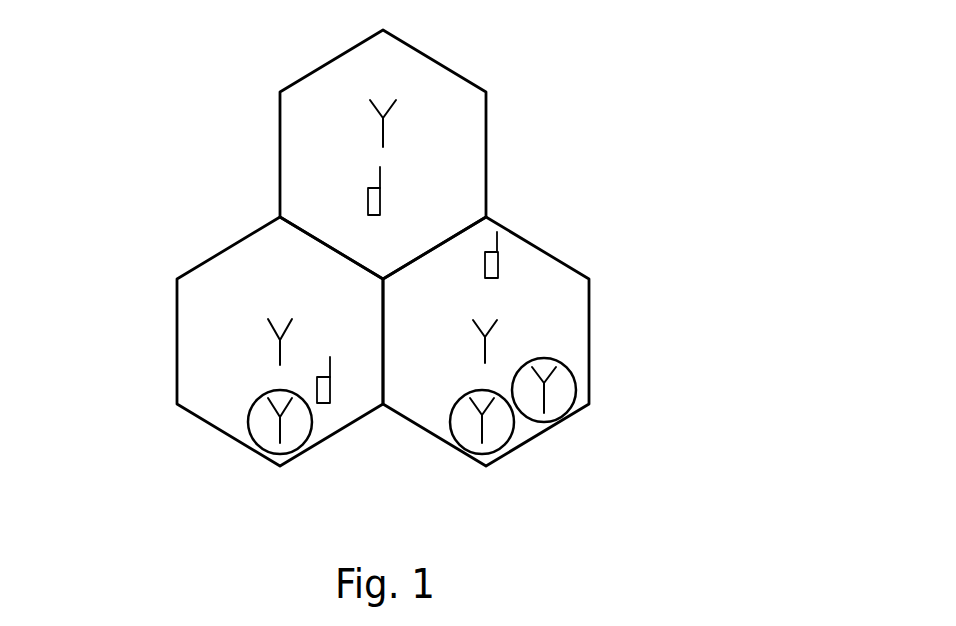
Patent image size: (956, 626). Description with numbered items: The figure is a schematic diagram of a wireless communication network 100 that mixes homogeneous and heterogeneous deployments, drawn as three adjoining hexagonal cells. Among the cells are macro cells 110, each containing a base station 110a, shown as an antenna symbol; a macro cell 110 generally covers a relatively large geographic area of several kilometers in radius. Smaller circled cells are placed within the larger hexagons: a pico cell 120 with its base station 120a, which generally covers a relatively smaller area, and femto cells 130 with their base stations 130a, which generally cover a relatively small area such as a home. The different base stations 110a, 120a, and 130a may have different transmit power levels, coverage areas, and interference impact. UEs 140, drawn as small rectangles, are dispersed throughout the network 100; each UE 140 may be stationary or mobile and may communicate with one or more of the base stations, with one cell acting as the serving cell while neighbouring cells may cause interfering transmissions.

The wireless communication network 100 is at (604, 42).
The macro cell 110 is at (486, 140).
The base station of macro cell 110a is at (387, 126).
The pico cell 120 is at (249, 418).
The base station of pico cell 120a is at (283, 430).
The femto cell 130 is at (562, 361).
The base station of femto cell 130a is at (546, 397).
The UE 140 is at (368, 202).